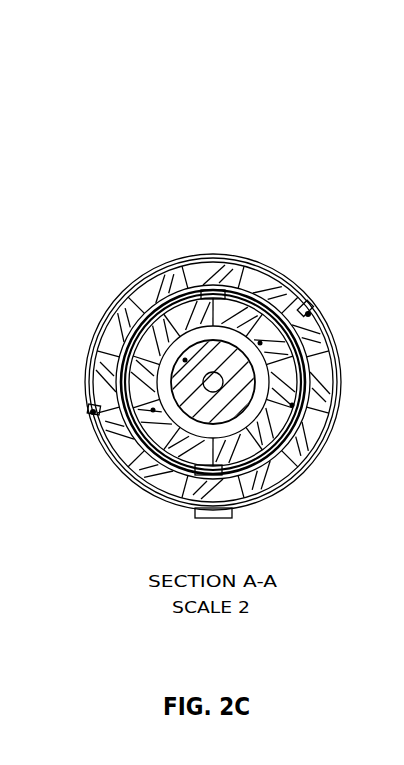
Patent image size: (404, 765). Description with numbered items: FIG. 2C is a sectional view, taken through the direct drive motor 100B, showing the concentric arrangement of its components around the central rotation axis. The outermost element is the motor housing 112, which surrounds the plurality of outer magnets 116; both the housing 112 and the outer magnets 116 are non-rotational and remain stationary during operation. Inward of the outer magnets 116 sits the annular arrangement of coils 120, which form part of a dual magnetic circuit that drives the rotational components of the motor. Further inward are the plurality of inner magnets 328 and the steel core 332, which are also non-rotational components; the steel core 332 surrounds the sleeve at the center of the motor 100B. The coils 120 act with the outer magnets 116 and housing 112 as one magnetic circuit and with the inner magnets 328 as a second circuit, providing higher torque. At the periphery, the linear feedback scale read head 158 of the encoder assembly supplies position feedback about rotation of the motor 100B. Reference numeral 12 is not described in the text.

The direct drive motor 100B is at (277, 150).
The wheel body 12 is at (297, 437).
The motor housing 112 is at (287, 488).
The outer magnets 116 is at (335, 363).
The coils 120 is at (258, 285).
The inner magnets 328 is at (312, 310).
The steel core 332 is at (130, 305).
The linear feedback scale read head 158 is at (212, 518).